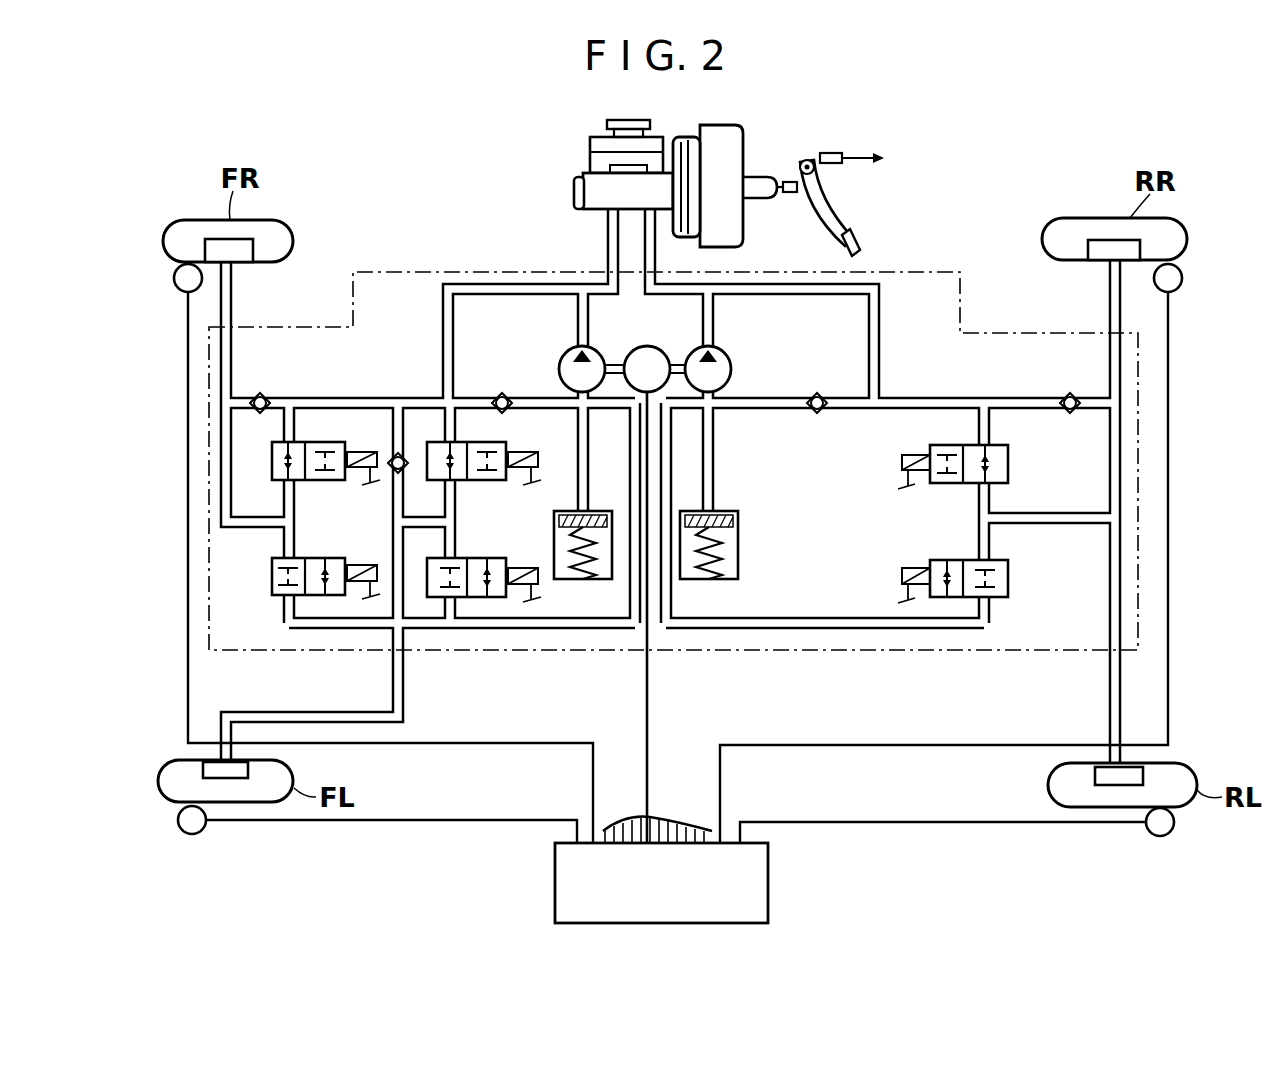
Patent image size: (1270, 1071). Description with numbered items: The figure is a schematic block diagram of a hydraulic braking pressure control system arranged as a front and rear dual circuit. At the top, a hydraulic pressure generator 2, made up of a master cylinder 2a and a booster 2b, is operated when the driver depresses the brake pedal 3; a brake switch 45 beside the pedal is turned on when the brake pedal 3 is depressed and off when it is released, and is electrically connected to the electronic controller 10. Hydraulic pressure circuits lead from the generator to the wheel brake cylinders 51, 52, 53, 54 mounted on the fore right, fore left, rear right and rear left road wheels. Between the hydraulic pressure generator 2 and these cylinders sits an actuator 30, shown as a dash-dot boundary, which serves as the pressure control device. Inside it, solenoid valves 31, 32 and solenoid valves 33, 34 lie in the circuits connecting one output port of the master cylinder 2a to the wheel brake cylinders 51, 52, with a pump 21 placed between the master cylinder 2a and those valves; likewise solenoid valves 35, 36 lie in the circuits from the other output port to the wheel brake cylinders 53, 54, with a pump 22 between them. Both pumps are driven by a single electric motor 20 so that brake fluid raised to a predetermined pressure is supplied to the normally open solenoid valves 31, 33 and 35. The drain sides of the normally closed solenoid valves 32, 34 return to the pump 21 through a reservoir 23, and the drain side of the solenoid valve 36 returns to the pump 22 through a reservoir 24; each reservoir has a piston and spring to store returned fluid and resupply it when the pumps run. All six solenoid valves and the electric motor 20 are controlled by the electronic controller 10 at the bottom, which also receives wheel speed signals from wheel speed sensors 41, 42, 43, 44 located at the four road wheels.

The hydraulic pressure generator 2 is at (578, 162).
The master cylinder 2a is at (578, 206).
The booster 2b is at (735, 245).
The brake pedal 3 is at (828, 212).
The electronic controller 10 is at (770, 880).
The electric motor 20 is at (659, 346).
The pump 21 is at (566, 352).
The pump 22 is at (724, 352).
The reservoir 23 is at (598, 580).
The reservoir 24 is at (722, 579).
The actuator 30 is at (957, 272).
The solenoid valve 31 is at (315, 442).
The solenoid valve 32 is at (315, 558).
The solenoid valve 33 is at (492, 442).
The solenoid valve 34 is at (480, 558).
The solenoid valve 35 is at (960, 445).
The solenoid valve 36 is at (960, 560).
The wheel speed sensor 41 is at (175, 287).
The wheel speed sensor 42 is at (205, 830).
The wheel speed sensor 43 is at (1181, 288).
The wheel speed sensor 44 is at (1147, 830).
The brake switch 45 is at (842, 153).
The wheel brake cylinder 51 is at (240, 260).
The wheel brake cylinder 52 is at (245, 762).
The wheel brake cylinder 53 is at (1098, 258).
The wheel brake cylinder 54 is at (1100, 768).